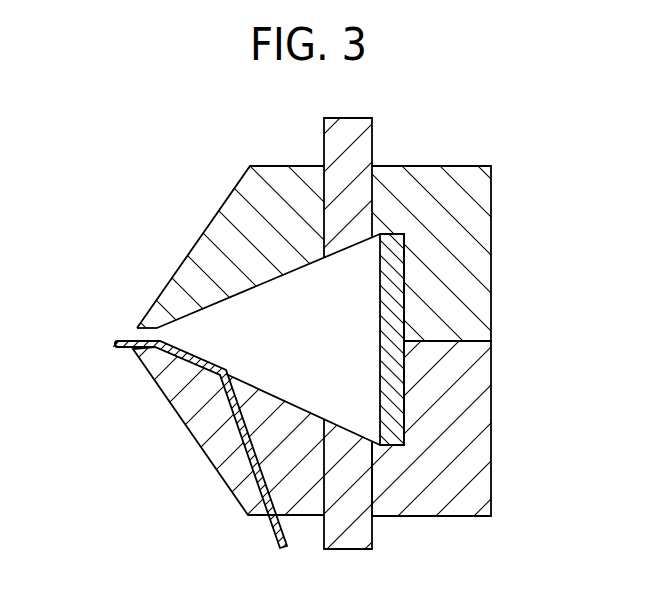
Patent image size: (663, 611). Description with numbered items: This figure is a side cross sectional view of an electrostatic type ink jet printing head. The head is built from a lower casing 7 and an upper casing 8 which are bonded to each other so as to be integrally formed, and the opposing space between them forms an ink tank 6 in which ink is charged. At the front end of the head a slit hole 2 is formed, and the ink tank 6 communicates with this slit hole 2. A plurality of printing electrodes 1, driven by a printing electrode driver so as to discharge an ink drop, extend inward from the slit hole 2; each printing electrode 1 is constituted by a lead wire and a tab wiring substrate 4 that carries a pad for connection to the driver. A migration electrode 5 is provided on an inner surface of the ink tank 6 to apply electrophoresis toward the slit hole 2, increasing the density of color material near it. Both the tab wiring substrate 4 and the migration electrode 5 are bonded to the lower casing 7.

The printing electrode 1 is at (113, 355).
The slit hole 2 is at (140, 324).
The tab wiring substrate 4 is at (278, 533).
The migration electrode 5 is at (405, 308).
The ink tank 6 is at (243, 307).
The lower casing 7 is at (438, 448).
The upper casing 8 is at (463, 174).